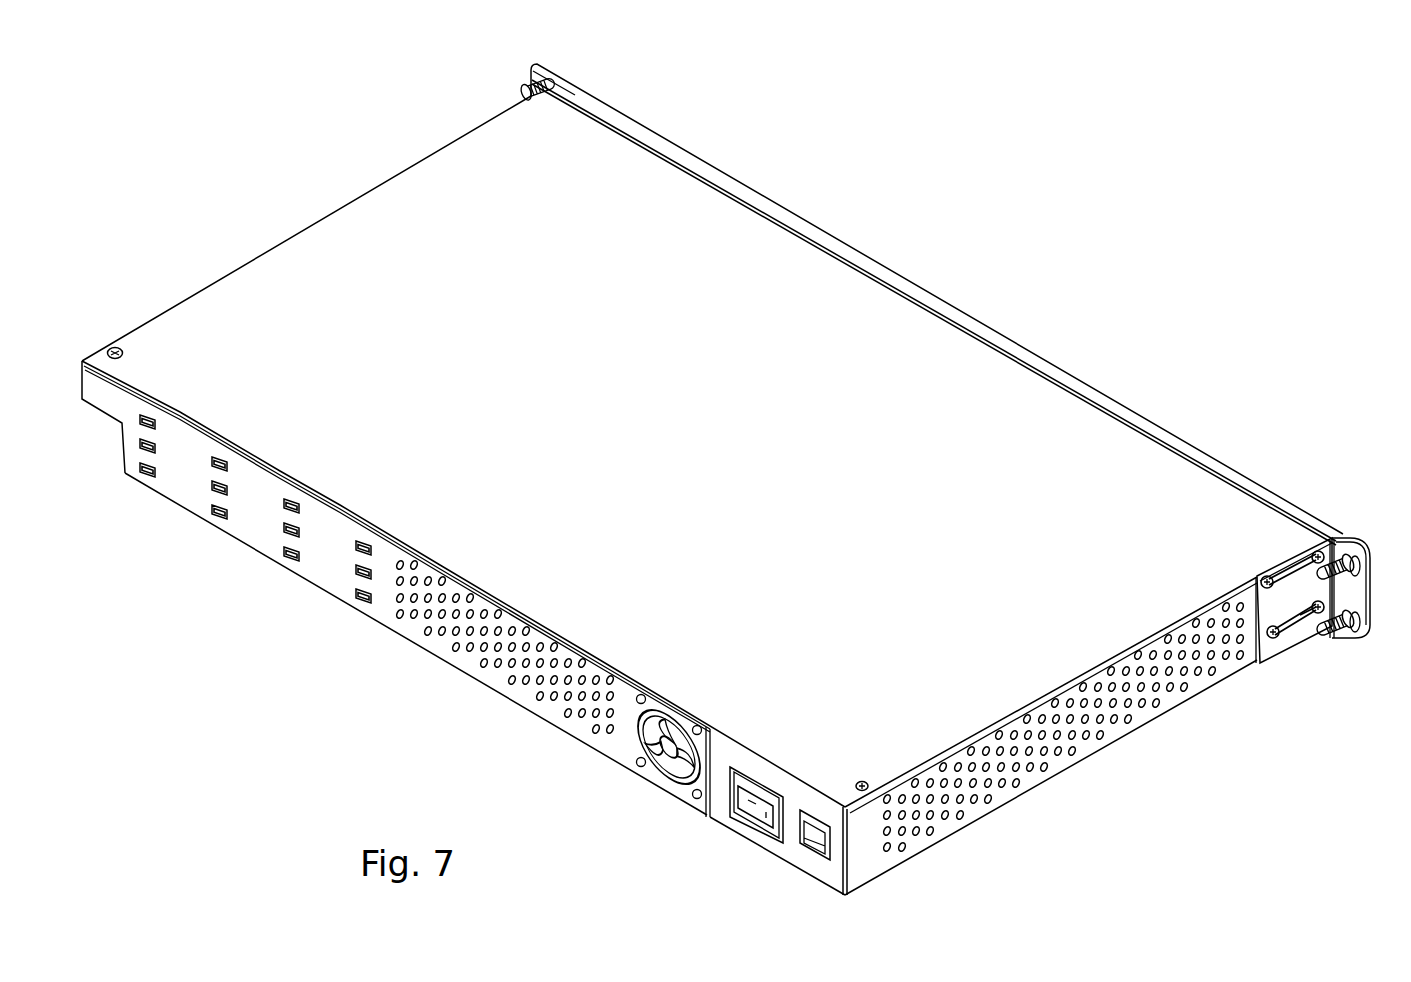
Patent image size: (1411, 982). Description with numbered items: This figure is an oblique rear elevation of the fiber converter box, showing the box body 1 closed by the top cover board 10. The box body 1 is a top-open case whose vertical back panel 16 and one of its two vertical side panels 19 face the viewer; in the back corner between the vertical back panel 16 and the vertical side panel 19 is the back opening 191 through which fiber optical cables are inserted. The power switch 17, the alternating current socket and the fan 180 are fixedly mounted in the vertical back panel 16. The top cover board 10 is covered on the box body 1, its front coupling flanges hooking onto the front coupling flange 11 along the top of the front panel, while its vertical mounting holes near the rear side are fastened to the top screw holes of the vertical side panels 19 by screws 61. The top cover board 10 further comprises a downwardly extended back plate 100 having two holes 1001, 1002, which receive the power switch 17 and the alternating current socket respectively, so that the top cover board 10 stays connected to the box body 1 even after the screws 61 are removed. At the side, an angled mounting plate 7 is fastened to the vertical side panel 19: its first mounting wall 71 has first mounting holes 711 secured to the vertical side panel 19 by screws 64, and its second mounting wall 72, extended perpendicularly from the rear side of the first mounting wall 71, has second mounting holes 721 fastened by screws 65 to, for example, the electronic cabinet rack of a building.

The box body 1 is at (479, 680).
The angled mounting plate 7 is at (1350, 533).
The top cover board 10 is at (1017, 393).
The front coupling flange 11 is at (1127, 419).
The vertical back panel 16 is at (325, 556).
The power switch 17 is at (812, 848).
The vertical side panel 19 is at (1060, 768).
The screw 61 is at (117, 347).
The screw 64 is at (1273, 641).
The screw 65 is at (518, 96).
The first mounting wall 71 is at (1300, 625).
The second mounting wall 72 is at (1352, 620).
The back plate 100 is at (770, 845).
The fan 180 is at (667, 748).
The back opening 191 is at (108, 417).
The first mounting hole 711 is at (1310, 640).
The second mounting hole 721 is at (1358, 630).
The hole 1001 is at (852, 862).
The hole 1002 is at (760, 780).